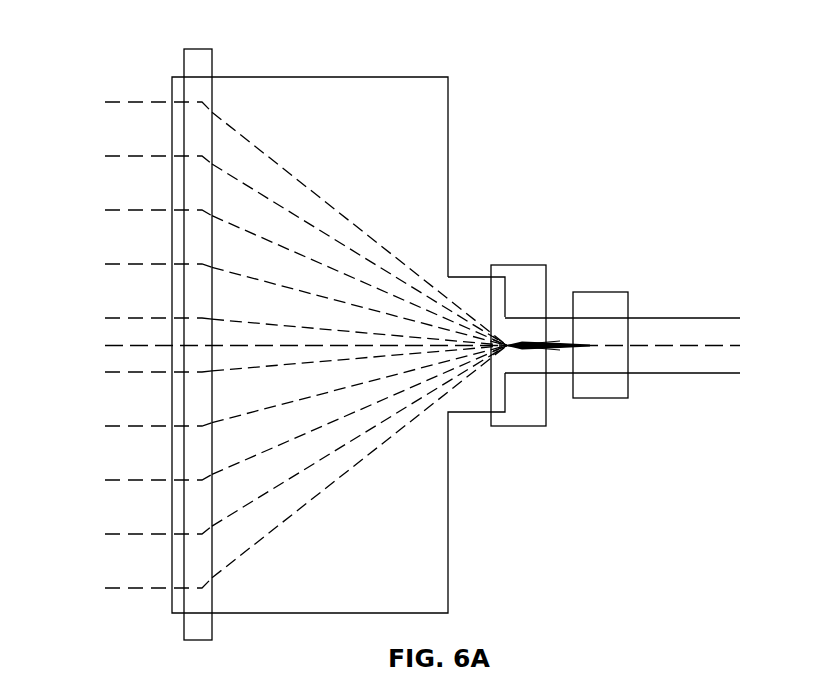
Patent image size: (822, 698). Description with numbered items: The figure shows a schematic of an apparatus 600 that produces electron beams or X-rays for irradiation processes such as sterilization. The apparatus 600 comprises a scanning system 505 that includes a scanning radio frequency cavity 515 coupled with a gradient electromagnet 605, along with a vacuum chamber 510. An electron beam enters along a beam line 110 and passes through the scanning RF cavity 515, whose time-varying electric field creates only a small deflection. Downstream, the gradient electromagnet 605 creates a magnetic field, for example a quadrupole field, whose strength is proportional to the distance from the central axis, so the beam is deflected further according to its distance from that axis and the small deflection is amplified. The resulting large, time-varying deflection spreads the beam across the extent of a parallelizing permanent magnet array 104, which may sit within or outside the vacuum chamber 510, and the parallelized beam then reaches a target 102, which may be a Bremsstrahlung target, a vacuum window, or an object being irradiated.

The apparatus 600 is at (646, 72).
The target 102 is at (168, 130).
The parallelizing permanent magnet array 104 is at (218, 49).
The scanning system 505 is at (578, 210).
The vacuum chamber 510 is at (453, 114).
The gradient electromagnet 605 is at (537, 265).
The scanning radio frequency cavity 515 is at (615, 287).
The beam line 110 is at (697, 343).